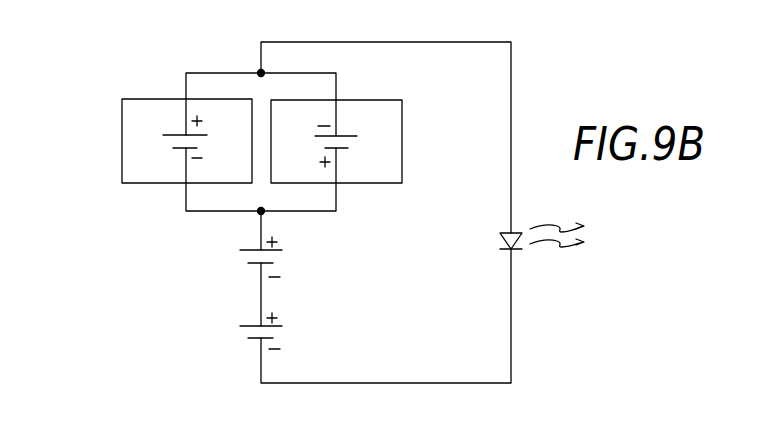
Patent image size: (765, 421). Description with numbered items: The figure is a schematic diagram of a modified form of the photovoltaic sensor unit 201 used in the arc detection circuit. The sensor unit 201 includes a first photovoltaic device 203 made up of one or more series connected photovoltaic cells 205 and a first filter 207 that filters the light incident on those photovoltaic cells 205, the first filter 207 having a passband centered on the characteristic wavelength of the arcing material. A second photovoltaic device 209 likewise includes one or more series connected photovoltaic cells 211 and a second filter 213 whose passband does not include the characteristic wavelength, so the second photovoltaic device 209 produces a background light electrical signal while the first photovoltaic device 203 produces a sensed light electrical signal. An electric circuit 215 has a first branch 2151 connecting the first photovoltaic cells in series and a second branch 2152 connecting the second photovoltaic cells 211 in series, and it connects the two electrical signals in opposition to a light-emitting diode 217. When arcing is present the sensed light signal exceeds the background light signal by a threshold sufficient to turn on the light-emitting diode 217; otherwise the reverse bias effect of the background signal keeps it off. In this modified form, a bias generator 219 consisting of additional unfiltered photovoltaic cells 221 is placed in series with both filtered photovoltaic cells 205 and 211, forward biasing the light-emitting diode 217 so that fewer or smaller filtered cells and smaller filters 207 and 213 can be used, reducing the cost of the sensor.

The sensor unit 201 is at (556, 73).
The first photovoltaic device 203 is at (155, 125).
The photovoltaic cells 205 is at (168, 131).
The first filter 207 is at (122, 163).
The second photovoltaic device 209 is at (368, 125).
The photovoltaic cells 211 is at (347, 132).
The second filter 213 is at (403, 164).
The electric circuit 215 is at (524, 343).
The first branch 2151 is at (183, 205).
The second branch 2152 is at (337, 208).
The light-emitting diode 217 is at (505, 250).
The bias generator 219 is at (188, 293).
The additional photovoltaic cells 221 is at (235, 293).